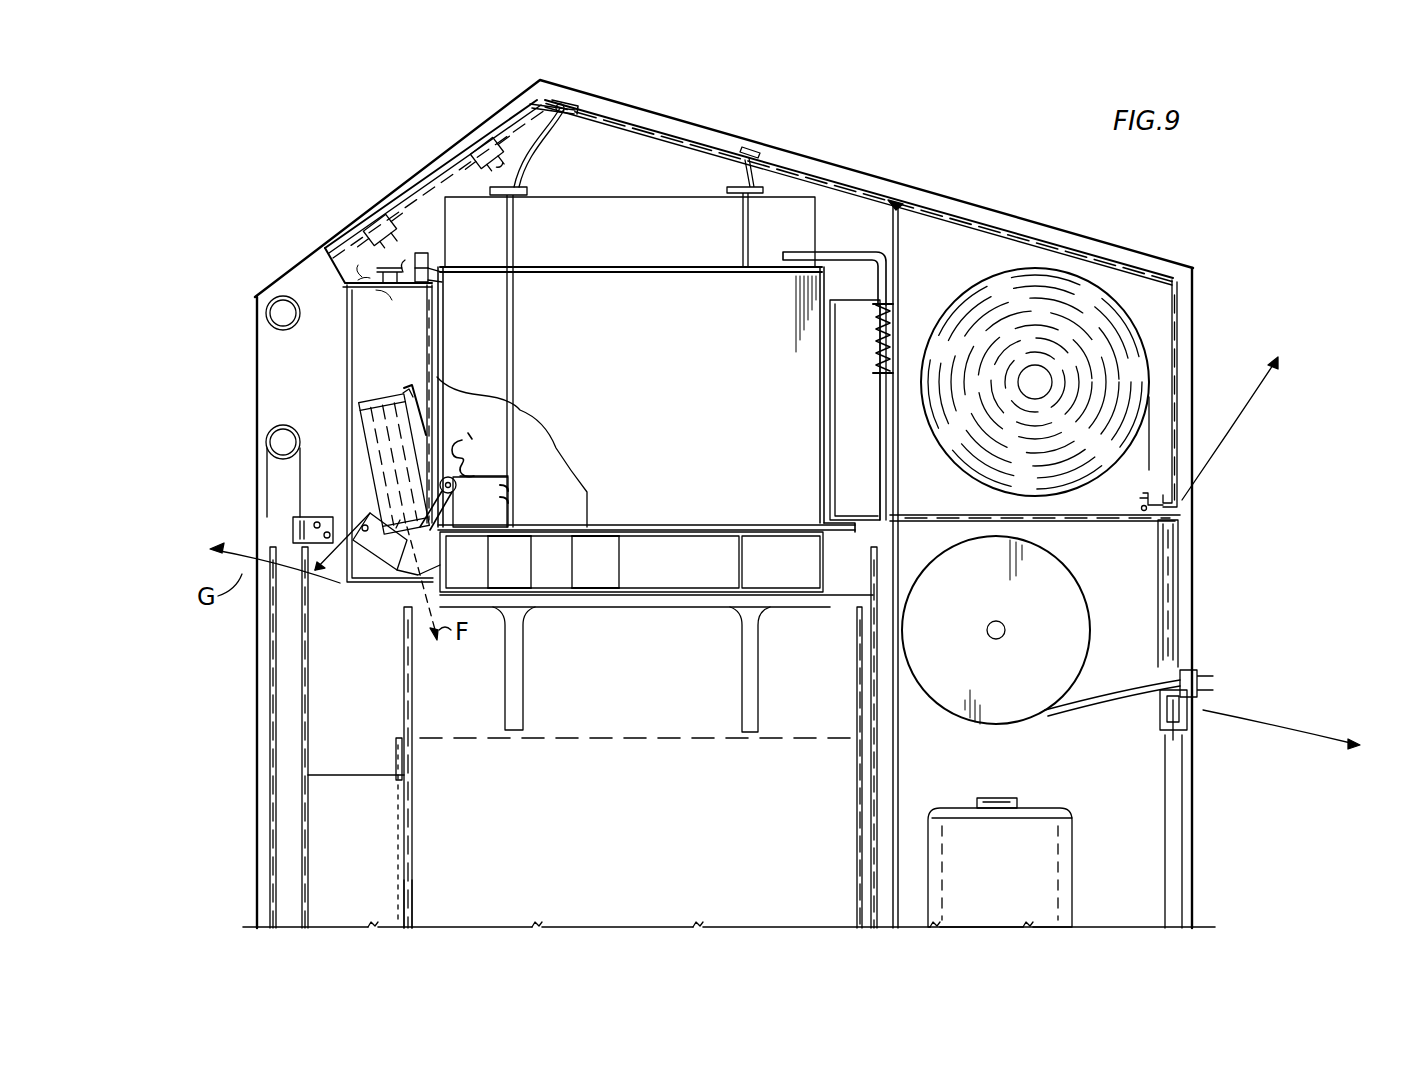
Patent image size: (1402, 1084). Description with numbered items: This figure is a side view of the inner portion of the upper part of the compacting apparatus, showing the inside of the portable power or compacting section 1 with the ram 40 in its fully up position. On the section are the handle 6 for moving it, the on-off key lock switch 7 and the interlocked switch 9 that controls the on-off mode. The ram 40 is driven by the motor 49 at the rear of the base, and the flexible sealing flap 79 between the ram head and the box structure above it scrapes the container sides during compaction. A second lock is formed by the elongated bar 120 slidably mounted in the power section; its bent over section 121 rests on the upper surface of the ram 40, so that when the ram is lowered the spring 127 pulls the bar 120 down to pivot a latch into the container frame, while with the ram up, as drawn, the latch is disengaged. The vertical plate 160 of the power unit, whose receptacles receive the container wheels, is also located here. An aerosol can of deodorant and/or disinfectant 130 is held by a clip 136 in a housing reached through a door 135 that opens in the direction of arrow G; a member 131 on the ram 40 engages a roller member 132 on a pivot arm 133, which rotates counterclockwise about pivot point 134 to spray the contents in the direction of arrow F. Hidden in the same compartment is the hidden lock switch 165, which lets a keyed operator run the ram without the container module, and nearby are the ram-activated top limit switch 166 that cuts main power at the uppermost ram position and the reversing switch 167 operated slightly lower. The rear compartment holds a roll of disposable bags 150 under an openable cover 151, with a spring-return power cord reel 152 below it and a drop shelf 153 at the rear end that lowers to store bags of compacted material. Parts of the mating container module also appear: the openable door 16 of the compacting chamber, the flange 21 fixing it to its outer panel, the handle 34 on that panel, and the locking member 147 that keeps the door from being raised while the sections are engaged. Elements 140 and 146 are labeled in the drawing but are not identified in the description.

The power section 1 is at (320, 235).
The handle 6 is at (269, 300).
The on-off key lock switch 7 is at (389, 216).
The switch 9 is at (479, 140).
The door 16 is at (402, 906).
The flange 21 is at (355, 774).
The handle 34 is at (268, 438).
The ram 40 is at (718, 354).
The motor 49 is at (1034, 801).
The sealing flap 79 is at (830, 532).
The bar 120 is at (879, 464).
The bent over section 121 is at (854, 250).
The spring 127 is at (878, 366).
The aerosol can 130 is at (378, 406).
The ram member 131 is at (462, 440).
The roller member 132 is at (452, 490).
The pivot arm 133 is at (387, 560).
The pivot point 134 is at (360, 516).
The door 135 is at (350, 426).
The clip 136 is at (406, 392).
The guide rail 140 is at (402, 688).
The rod 146 is at (396, 746).
The locking member 147 is at (296, 519).
The roll of disposable bags 150 is at (977, 290).
The cover 151 is at (1152, 266).
The reel 152 is at (1067, 576).
The drop shelf 153 is at (1188, 776).
The vertical plate 160 is at (870, 586).
The hidden lock switch 165 is at (384, 286).
The top limit switch 166 is at (415, 254).
The reversing switch 167 is at (419, 286).